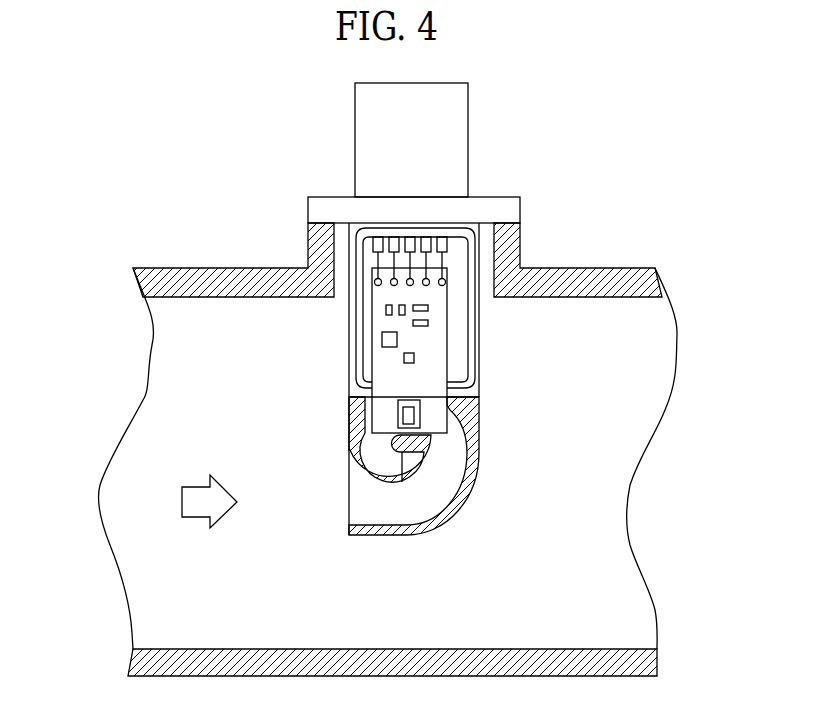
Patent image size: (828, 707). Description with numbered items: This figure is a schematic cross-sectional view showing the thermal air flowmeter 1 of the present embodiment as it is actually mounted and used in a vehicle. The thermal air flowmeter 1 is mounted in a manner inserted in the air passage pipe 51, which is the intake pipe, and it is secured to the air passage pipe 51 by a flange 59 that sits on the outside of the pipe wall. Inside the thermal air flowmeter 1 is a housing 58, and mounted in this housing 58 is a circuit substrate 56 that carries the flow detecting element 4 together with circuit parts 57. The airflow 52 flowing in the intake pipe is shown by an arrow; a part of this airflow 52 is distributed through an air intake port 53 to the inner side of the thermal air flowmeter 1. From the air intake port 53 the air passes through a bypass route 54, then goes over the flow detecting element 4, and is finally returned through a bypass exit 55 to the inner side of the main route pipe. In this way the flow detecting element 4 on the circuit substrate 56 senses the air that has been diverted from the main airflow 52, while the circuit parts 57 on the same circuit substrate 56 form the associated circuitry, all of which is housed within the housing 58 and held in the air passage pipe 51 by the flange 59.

The thermal air flowmeter 1 is at (462, 141).
The flow detecting element 4 is at (418, 410).
The air passage pipe 51 is at (658, 283).
The airflow 52 is at (182, 506).
The air intake port 53 is at (353, 507).
The bypass route 54 is at (458, 445).
The bypass exit 55 is at (412, 468).
The circuit substrate 56 is at (380, 390).
The circuit parts 57 is at (382, 340).
The housing 58 is at (447, 265).
The flange 59 is at (508, 212).